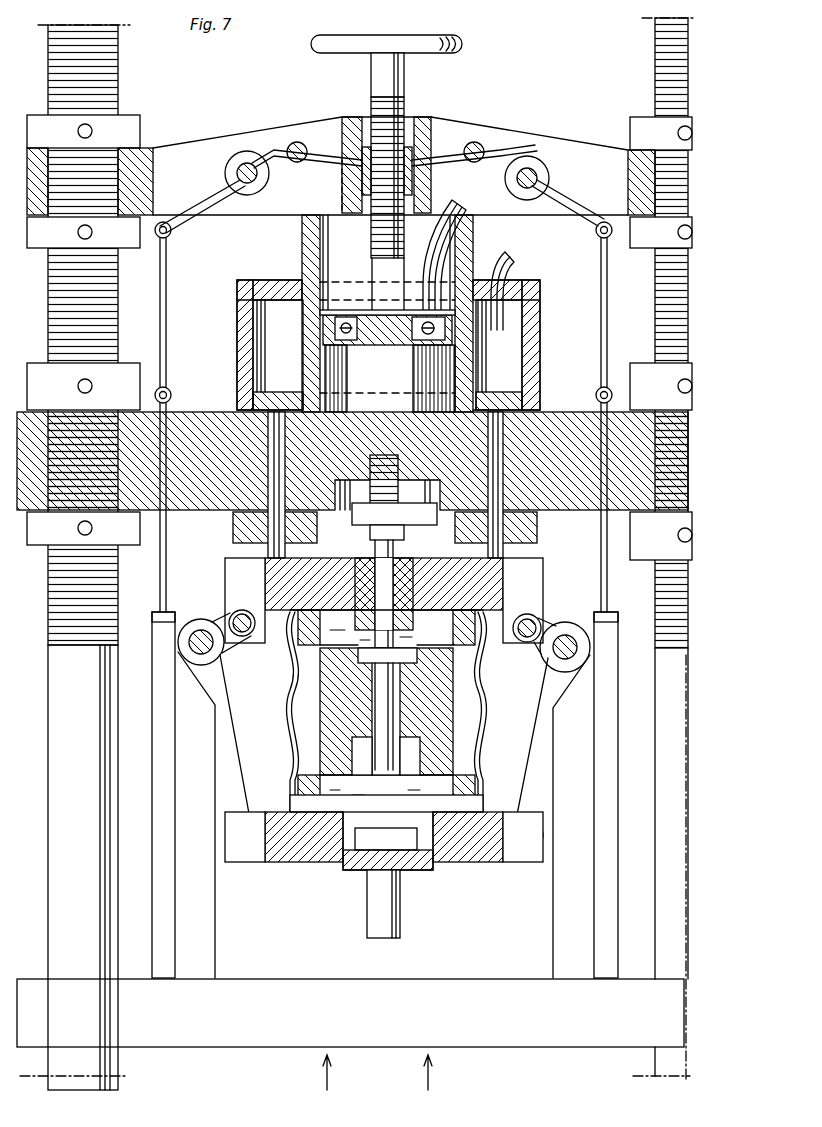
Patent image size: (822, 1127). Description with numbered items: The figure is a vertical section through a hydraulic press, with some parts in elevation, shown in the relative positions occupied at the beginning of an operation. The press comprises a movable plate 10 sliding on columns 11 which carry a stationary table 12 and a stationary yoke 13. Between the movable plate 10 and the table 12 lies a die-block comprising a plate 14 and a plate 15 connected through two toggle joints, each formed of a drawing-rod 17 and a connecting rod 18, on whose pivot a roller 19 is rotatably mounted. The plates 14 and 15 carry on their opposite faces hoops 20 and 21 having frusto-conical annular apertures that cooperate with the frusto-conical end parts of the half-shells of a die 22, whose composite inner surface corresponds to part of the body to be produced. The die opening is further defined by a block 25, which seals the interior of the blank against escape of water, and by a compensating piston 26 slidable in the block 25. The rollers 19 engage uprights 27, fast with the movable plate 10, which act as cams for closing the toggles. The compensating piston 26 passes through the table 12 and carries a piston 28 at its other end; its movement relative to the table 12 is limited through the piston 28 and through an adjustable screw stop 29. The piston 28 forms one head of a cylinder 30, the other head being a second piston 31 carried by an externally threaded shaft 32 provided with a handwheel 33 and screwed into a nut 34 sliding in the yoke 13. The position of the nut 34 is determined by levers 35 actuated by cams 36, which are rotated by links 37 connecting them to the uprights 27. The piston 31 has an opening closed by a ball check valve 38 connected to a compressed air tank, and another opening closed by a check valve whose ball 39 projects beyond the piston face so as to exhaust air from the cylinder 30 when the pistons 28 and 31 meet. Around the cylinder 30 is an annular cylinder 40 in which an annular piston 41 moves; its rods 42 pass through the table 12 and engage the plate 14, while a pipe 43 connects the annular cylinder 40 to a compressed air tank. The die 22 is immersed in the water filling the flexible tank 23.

The movable plate 10 is at (232, 1035).
The horizontal columns 11 is at (100, 825).
The stationary table 12 is at (582, 492).
The stationary yoke 13 is at (612, 160).
The plate 14 is at (490, 588).
The plate 15 is at (450, 870).
The drawing-rod 17 is at (542, 792).
The connecting rod 18 is at (545, 622).
The roller 19 is at (582, 648).
The hoop 20 is at (483, 650).
The hoop 21 is at (470, 802).
The die 22 is at (335, 710).
The flexible tank 23 is at (485, 696).
The block 25 is at (350, 610).
The compensating piston 26 is at (395, 560).
The uprights 27 is at (595, 742).
The piston 28 is at (337, 395).
The adjustable screw stop 29 is at (372, 516).
The cylinder 30 is at (470, 248).
The second piston 31 is at (455, 325).
The externally threaded shaft 32 is at (372, 105).
The handwheel 33 is at (403, 44).
The nut 34 is at (432, 135).
The levers 35 is at (290, 142).
The cams 36 is at (232, 165).
The links 37 is at (168, 275).
The ball check valve 38 is at (430, 342).
The ball 39 is at (350, 340).
The annular cylinder 40 is at (512, 357).
The annular piston 41 is at (262, 397).
The rods 42 is at (275, 490).
The pipe 43 is at (512, 272).